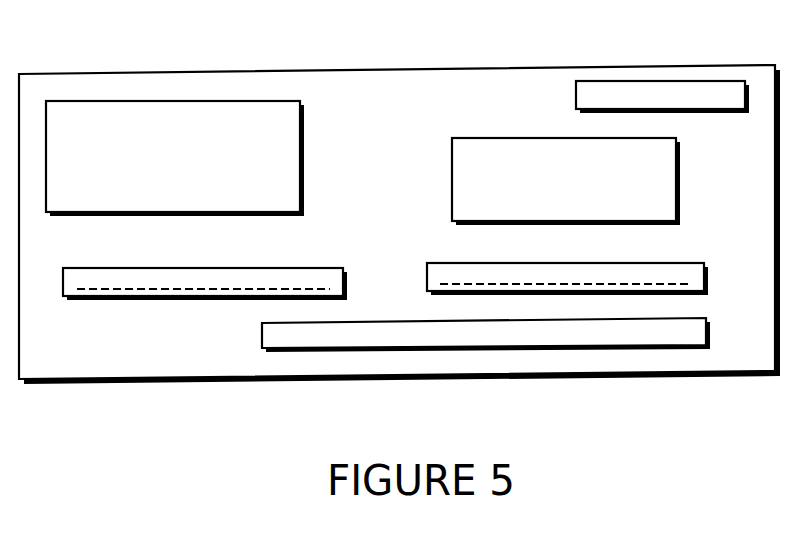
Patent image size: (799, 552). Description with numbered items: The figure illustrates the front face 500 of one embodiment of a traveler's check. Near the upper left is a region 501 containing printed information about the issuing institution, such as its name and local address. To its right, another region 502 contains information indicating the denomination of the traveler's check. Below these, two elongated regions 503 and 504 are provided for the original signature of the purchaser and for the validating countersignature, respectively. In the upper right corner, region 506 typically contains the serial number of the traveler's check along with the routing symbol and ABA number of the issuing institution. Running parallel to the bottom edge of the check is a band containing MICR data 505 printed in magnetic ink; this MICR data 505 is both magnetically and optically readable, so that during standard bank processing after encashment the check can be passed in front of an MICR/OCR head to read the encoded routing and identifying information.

The front face 500 is at (370, 85).
The issuing institution information region 501 is at (305, 152).
The denomination region 502 is at (468, 138).
The original signature region 503 is at (303, 265).
The countersignature region 504 is at (452, 263).
The MICR data 505 is at (300, 352).
The serial number region 506 is at (673, 80).